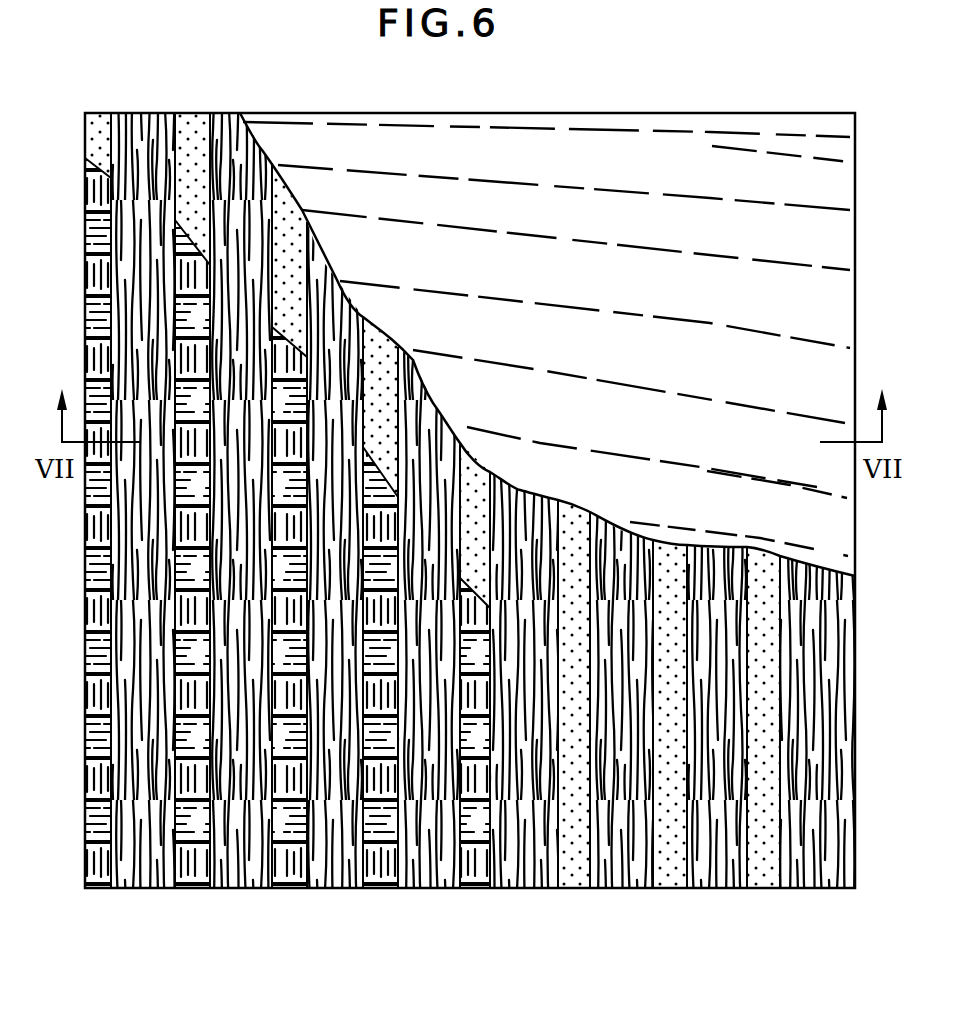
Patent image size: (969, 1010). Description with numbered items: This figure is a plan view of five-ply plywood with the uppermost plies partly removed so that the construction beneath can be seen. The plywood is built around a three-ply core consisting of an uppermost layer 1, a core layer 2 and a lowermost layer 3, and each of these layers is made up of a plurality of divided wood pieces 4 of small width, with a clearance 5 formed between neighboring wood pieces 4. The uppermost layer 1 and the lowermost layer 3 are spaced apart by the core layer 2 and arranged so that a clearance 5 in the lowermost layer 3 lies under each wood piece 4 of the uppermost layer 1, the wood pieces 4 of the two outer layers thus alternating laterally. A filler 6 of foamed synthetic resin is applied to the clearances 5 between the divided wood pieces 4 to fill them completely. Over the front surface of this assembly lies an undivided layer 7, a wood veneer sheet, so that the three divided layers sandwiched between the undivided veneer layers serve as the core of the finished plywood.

The uppermost layer 1 is at (814, 880).
The core layer 2 is at (92, 838).
The lowermost layer 3 is at (92, 783).
The divided wood pieces 4 is at (90, 552).
The clearance 5 is at (92, 600).
The filler 6 is at (570, 875).
The undivided layer 7 is at (842, 306).